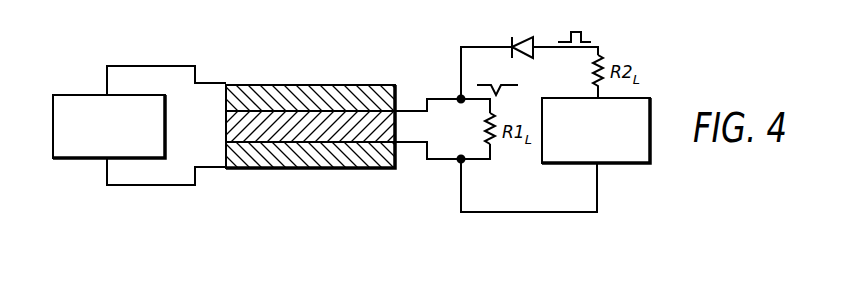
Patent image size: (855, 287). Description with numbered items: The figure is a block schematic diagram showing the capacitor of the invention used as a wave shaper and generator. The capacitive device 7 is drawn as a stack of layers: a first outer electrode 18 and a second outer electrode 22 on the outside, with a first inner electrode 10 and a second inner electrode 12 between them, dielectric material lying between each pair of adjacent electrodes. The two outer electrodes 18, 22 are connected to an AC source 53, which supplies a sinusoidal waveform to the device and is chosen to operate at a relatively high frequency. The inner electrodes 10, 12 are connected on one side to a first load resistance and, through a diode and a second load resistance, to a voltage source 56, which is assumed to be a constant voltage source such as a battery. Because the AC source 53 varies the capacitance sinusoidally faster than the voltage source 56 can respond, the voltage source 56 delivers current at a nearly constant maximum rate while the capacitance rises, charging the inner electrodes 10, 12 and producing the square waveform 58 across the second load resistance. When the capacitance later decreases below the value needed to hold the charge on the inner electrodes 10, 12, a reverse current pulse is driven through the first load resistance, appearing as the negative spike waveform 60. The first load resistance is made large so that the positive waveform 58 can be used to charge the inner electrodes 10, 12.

The AC source 53 is at (71, 95).
The electro-optic layered device 7 is at (325, 118).
The second outer electrode 22 is at (345, 85).
The second inner electrode 12 is at (390, 108).
The first inner electrode 10 is at (391, 142).
The first outer electrode 18 is at (348, 170).
The square waveform 58 is at (578, 32).
The negative spike waveform 60 is at (507, 87).
The voltage source 56 is at (652, 98).